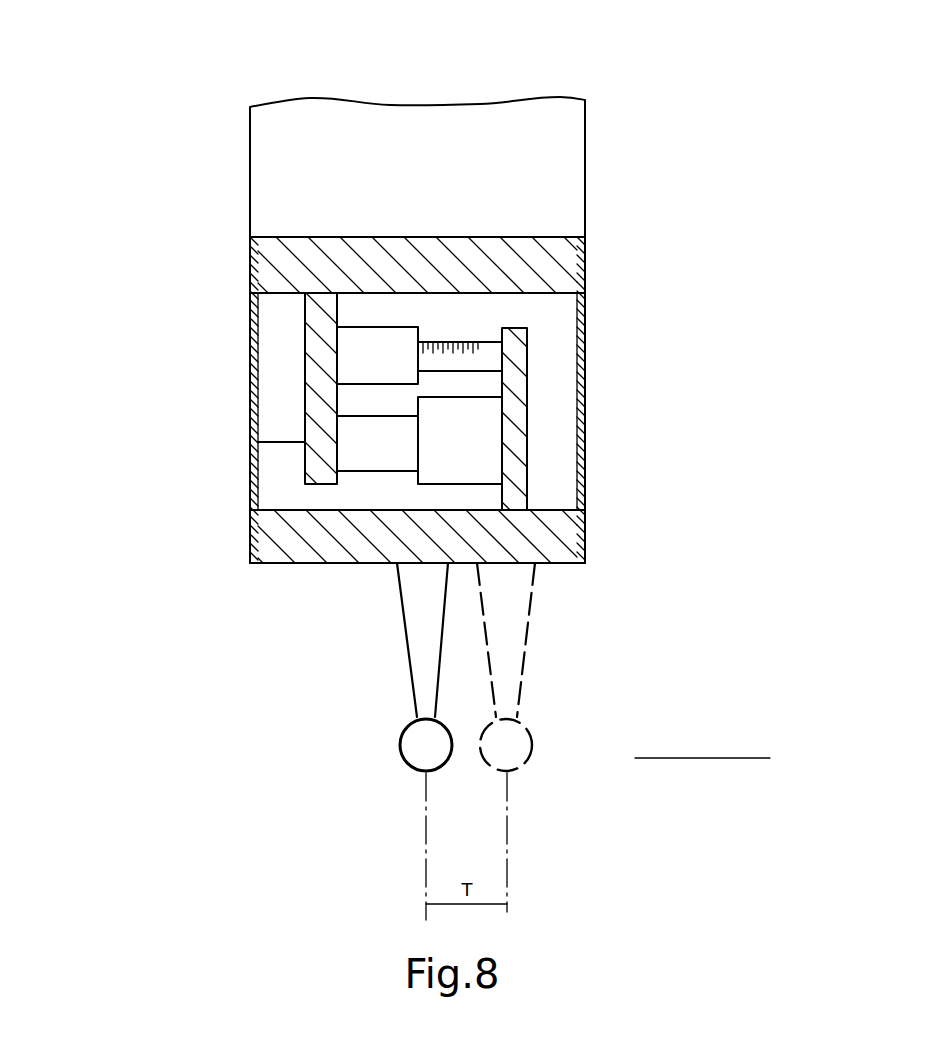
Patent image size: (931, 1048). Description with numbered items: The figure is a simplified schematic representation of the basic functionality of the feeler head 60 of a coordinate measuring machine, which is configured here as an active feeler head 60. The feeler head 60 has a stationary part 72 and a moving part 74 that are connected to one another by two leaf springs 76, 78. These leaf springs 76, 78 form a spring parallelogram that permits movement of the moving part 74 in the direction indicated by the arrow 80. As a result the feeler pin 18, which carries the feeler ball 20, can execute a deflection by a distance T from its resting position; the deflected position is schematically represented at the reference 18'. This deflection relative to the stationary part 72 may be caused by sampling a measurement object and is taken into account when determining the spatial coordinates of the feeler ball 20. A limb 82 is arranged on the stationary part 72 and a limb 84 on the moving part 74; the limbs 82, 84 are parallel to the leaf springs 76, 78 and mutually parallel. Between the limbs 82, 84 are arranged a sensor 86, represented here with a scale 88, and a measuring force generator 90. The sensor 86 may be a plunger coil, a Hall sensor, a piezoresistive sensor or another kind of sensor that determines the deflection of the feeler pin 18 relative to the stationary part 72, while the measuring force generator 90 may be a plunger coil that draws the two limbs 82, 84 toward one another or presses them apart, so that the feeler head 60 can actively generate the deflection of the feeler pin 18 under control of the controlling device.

The feeler pin 18 is at (382, 646).
The feeler pin in deflection position 18' is at (586, 667).
The feeler ball 20 is at (398, 750).
The feeler head 60 is at (592, 328).
The stationary part 72 is at (393, 273).
The moving part 74 is at (287, 545).
The leaf spring 76 is at (250, 395).
The leaf spring 78 is at (587, 468).
The arrow 80 is at (690, 758).
The limb 82 is at (317, 453).
The limb 84 is at (518, 407).
The sensor 86 is at (368, 347).
The scale 88 is at (462, 342).
The measuring force generator 90 is at (382, 485).